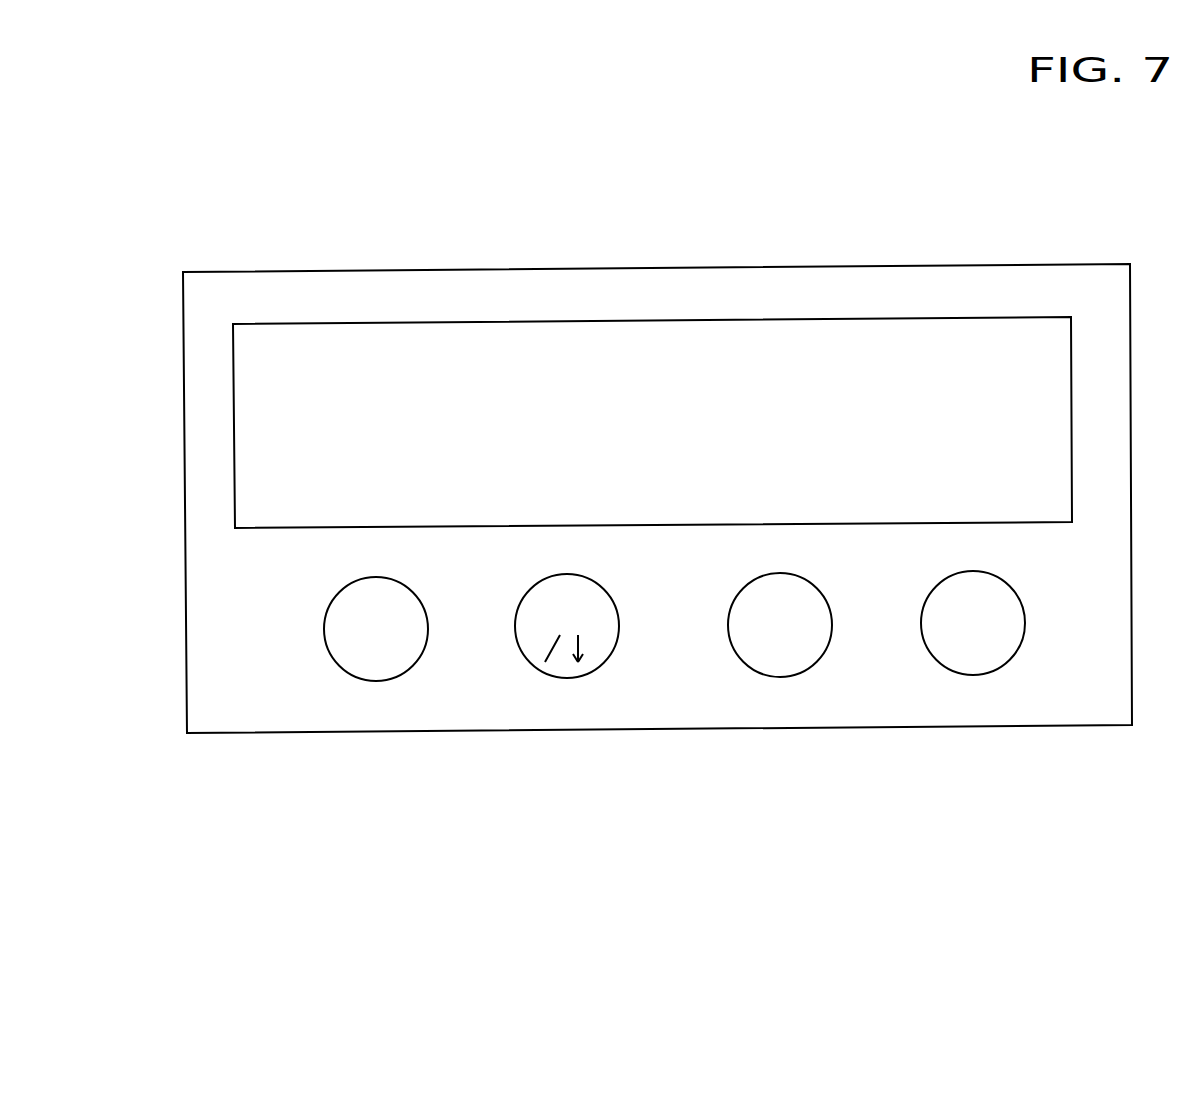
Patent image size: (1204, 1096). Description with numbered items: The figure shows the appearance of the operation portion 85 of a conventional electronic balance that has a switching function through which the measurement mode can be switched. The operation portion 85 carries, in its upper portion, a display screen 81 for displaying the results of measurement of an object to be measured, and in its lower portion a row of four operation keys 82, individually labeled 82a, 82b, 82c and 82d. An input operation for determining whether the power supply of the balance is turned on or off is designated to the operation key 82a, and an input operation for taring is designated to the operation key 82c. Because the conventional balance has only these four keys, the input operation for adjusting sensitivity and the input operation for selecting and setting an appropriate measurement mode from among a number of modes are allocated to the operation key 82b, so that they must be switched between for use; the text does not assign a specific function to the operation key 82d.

The operation portion 85 is at (777, 134).
The display screen 81 is at (647, 378).
The operation keys 82 is at (675, 736).
The operation key 82a is at (380, 682).
The operation key 82b is at (567, 680).
The operation key 82c is at (780, 677).
The operation key 82d is at (980, 677).